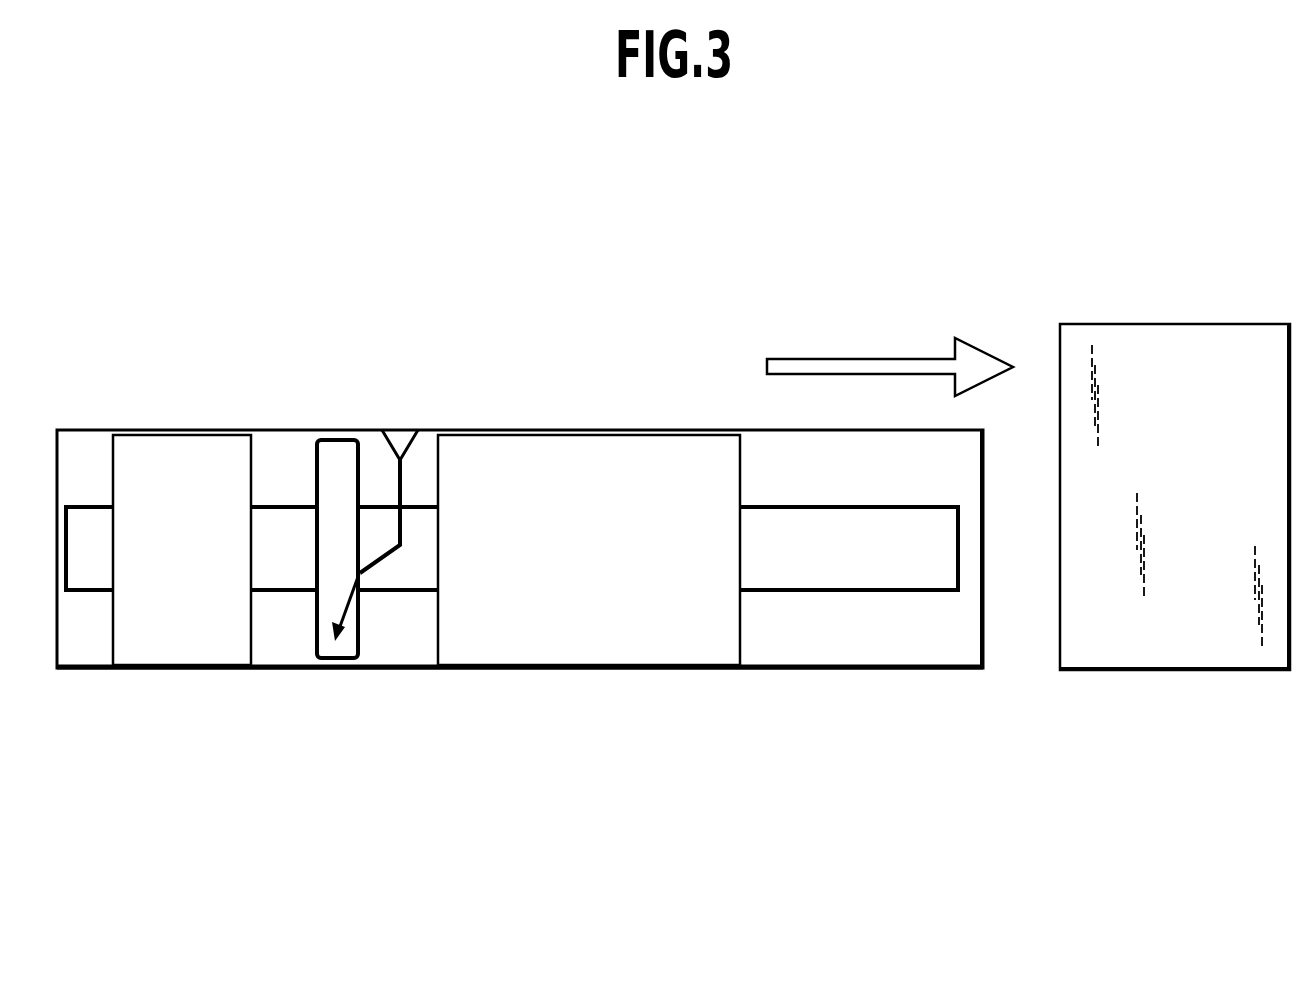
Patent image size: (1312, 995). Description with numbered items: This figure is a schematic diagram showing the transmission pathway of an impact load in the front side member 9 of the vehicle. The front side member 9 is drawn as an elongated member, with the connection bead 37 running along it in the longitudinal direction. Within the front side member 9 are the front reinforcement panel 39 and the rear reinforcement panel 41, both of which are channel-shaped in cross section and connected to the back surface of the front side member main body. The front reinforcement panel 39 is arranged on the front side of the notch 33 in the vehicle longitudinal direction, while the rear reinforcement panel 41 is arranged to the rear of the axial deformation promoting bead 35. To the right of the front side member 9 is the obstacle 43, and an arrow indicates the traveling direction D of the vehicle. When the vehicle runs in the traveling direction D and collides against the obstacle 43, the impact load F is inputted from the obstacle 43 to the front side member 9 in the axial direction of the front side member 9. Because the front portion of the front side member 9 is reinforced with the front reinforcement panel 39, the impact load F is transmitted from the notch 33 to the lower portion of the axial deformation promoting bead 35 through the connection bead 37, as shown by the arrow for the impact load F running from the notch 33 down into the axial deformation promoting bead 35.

The front side member 9 is at (566, 318).
The notch 33 is at (405, 455).
The axial deformation promoting bead 35 is at (335, 462).
The connection bead 37 is at (860, 562).
The front reinforcement panel 39 is at (633, 463).
The rear reinforcement panel 41 is at (180, 447).
The obstacle 43 is at (1173, 338).
The traveling direction D is at (815, 367).
The impact load F is at (403, 536).